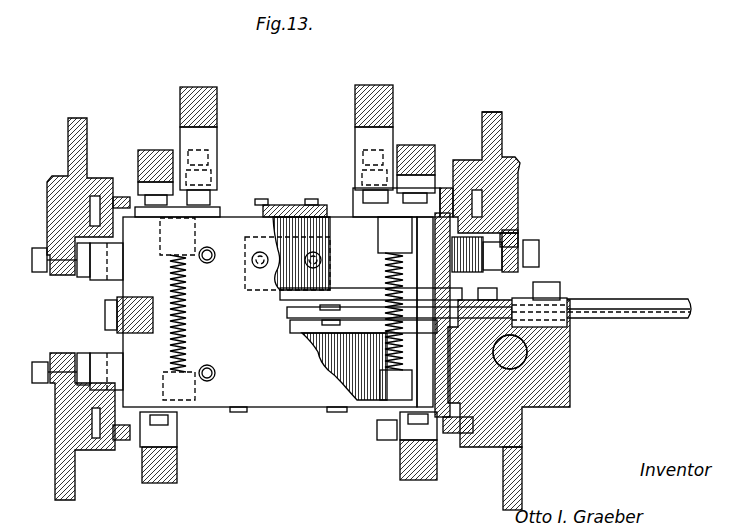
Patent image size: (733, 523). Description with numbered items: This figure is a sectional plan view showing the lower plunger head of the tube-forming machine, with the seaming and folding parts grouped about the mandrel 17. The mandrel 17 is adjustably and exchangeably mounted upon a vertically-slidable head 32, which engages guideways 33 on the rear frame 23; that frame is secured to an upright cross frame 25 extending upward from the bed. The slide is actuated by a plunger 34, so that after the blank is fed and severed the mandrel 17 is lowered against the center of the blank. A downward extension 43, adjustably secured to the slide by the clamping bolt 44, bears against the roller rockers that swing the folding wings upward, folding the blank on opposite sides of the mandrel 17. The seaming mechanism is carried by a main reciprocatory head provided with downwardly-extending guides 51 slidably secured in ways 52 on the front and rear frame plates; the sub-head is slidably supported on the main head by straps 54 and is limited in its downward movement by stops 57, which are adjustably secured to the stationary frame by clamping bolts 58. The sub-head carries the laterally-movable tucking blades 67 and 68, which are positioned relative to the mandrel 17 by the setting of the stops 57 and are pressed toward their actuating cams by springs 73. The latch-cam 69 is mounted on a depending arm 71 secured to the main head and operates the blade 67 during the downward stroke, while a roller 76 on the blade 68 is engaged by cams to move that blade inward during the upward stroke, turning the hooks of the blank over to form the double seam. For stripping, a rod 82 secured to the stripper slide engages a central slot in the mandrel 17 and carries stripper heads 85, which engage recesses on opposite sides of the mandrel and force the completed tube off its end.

The mandrel 17 is at (300, 322).
The rear frame 23 is at (520, 465).
The upright cross frame 25 is at (500, 112).
The vertically-slidable head 32 is at (572, 343).
The guideways 33 is at (572, 367).
The plunger 34 is at (530, 330).
The downward extension 43 is at (600, 300).
The clamping bolt 44 is at (548, 295).
The downwardly-extending guides 51 is at (105, 200).
The ways 52 is at (93, 165).
The straps 54 is at (155, 315).
The stops 57 is at (80, 280).
The clamping bolts 58 is at (30, 275).
The tucking blade 67 is at (365, 405).
The tucking blade 68 is at (282, 292).
The latch-cam 69 is at (398, 440).
The depending arms 71 is at (349, 110).
The springs 73 is at (192, 348).
The roller 76 is at (153, 150).
The rod 82 is at (690, 299).
The stripper heads 85 is at (318, 413).